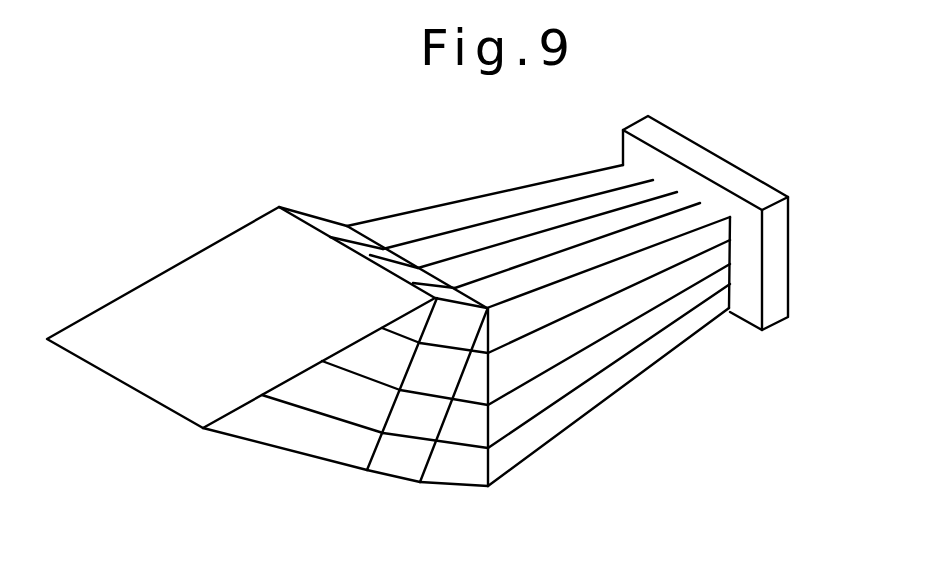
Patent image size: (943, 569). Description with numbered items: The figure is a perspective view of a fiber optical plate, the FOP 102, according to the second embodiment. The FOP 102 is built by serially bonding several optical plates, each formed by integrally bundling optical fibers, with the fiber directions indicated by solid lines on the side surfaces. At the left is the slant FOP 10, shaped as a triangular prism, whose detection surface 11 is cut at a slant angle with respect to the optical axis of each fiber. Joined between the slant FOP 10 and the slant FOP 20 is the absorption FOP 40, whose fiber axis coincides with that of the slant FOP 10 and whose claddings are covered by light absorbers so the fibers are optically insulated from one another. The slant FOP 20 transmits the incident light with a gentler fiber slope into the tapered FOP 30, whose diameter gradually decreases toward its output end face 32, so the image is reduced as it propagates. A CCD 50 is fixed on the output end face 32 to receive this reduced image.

The FOP 102 is at (406, 197).
The detection surface 11 is at (170, 290).
The slant FOP 10 is at (297, 443).
The absorption FOP 40 is at (405, 468).
The slant FOP 20 is at (462, 477).
The tapered FOP 30 is at (590, 397).
The output end face 32 is at (731, 280).
The CCD 50 is at (728, 168).